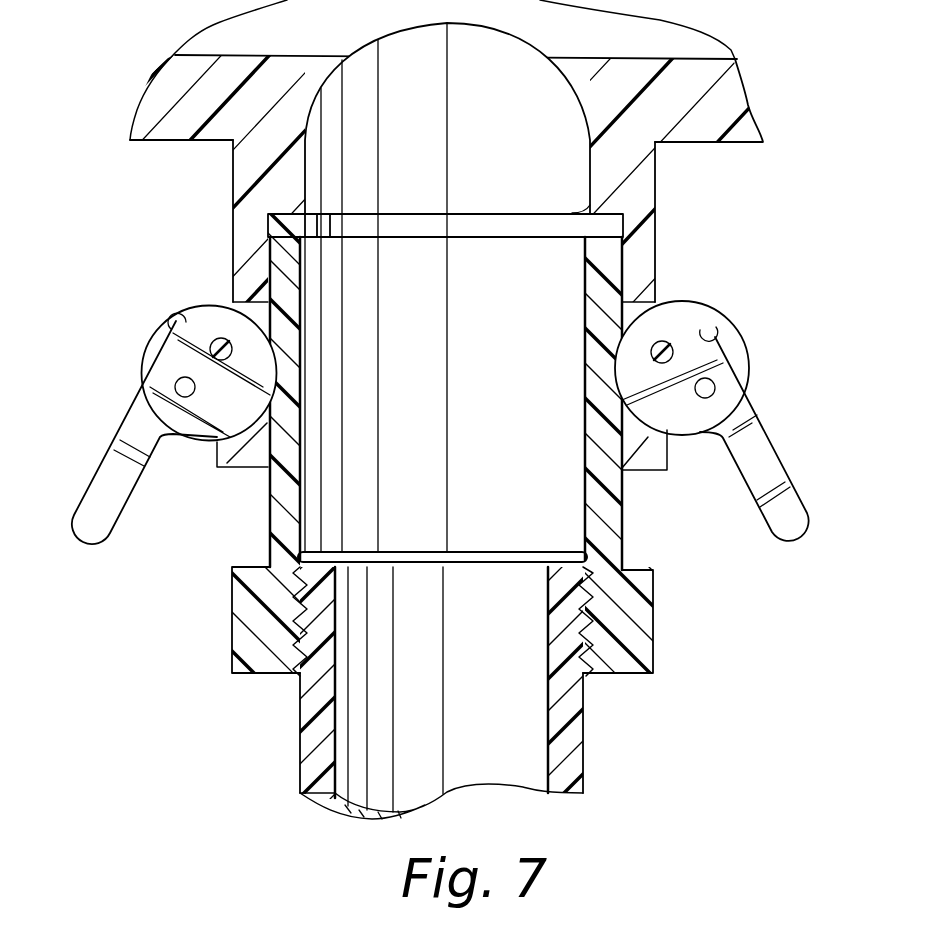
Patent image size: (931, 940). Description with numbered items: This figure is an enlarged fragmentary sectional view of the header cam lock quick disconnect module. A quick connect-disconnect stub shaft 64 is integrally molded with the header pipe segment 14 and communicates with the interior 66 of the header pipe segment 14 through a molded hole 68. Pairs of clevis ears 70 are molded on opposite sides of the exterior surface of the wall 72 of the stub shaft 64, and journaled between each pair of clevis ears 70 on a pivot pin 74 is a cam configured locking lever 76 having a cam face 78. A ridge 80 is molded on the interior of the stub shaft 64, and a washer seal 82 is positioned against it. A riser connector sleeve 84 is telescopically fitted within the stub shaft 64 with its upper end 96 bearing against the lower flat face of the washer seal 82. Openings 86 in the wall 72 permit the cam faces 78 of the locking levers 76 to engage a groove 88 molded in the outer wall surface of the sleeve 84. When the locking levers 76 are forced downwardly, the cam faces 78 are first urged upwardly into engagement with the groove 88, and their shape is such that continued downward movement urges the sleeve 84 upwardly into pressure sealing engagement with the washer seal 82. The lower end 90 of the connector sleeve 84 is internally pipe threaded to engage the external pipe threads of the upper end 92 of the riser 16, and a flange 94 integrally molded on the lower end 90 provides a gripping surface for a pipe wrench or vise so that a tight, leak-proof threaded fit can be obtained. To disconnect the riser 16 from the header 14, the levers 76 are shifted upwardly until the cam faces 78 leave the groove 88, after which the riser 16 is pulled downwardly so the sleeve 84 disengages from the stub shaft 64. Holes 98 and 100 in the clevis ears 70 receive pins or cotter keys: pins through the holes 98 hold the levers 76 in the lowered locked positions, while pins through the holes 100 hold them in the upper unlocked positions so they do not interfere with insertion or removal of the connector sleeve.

The header pipe segment 14 is at (730, 105).
The riser 16 is at (583, 762).
The quick connect-disconnect stub shaft 64 is at (632, 196).
The interior 66 is at (564, 40).
The molded hole 68 is at (428, 137).
The clevis ears 70 is at (148, 330).
The wall 72 is at (655, 245).
The pivot pin 74 is at (209, 350).
The locking lever 76 is at (100, 480).
The cam face 78 is at (205, 441).
The ridge 80 is at (277, 248).
The washer seal 82 is at (562, 212).
The riser connector sleeve 84 is at (628, 547).
The openings 86 is at (230, 300).
The groove 88 is at (280, 367).
The lower end 90 is at (622, 667).
The upper end 92 is at (320, 618).
The flange 94 is at (655, 632).
The upper end 96 is at (302, 277).
The holes 98 is at (174, 390).
The holes 100 is at (168, 322).